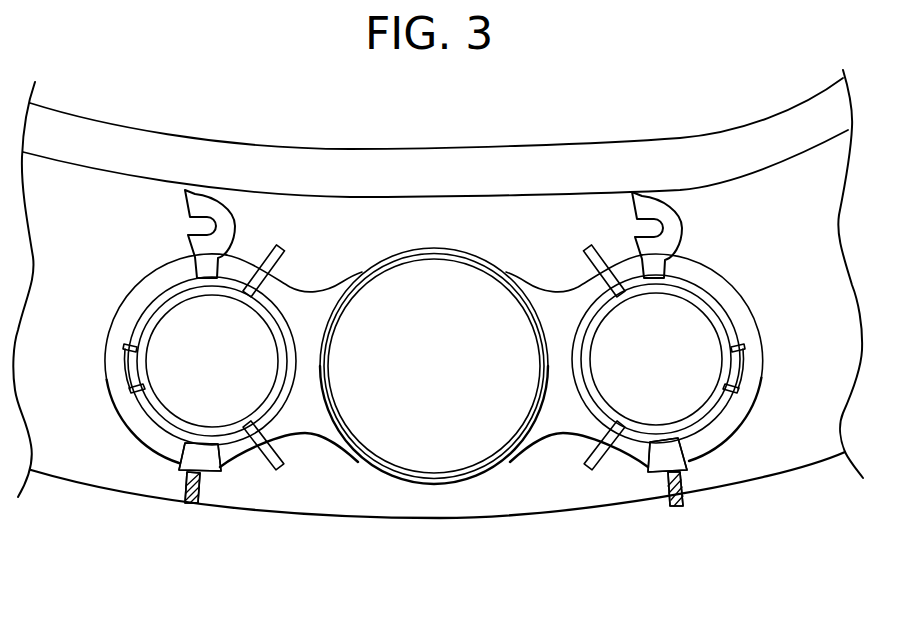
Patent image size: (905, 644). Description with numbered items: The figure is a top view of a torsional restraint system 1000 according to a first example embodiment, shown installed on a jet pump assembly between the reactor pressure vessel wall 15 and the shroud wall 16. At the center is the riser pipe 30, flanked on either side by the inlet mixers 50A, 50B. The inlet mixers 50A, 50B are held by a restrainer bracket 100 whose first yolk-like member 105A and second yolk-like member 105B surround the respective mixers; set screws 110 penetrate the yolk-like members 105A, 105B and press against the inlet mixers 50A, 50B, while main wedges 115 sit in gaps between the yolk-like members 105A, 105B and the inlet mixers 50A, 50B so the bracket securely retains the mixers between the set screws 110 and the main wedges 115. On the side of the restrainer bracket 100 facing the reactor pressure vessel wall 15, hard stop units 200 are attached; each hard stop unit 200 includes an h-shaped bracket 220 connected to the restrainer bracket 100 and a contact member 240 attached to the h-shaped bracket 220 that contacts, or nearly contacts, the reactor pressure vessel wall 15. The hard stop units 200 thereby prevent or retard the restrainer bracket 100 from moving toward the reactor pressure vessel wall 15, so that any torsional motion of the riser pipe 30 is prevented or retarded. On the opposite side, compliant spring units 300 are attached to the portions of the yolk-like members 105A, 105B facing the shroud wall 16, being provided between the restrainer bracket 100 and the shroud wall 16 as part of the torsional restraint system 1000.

The reactor pressure vessel wall 15 is at (435, 553).
The shroud wall 16 is at (444, 166).
The riser pipe 30 is at (453, 253).
The inlet mixer 50A is at (165, 425).
The inlet mixer 50B is at (703, 420).
The restrainer bracket 100 is at (137, 247).
The first yolk-like member 105A is at (103, 355).
The second yolk-like member 105B is at (763, 358).
The set screw 110 is at (282, 252).
The main wedge 115 is at (131, 346).
The hard stop unit 200 is at (178, 485).
The h-shaped bracket 220 is at (227, 468).
The contact member 240 is at (191, 505).
The compliant spring unit 300 is at (178, 214).
The torsional restraint system 1000 is at (753, 268).